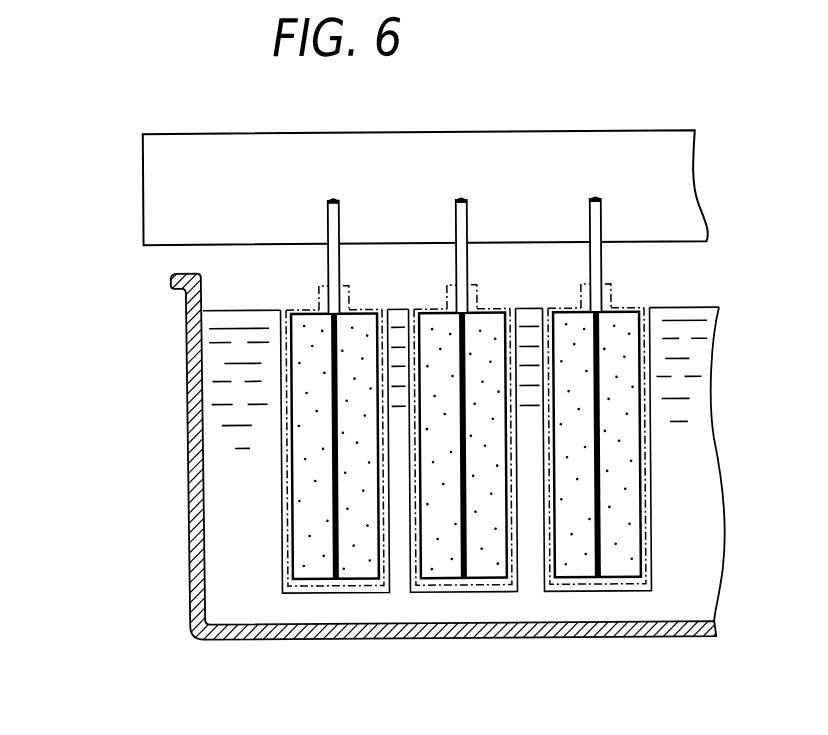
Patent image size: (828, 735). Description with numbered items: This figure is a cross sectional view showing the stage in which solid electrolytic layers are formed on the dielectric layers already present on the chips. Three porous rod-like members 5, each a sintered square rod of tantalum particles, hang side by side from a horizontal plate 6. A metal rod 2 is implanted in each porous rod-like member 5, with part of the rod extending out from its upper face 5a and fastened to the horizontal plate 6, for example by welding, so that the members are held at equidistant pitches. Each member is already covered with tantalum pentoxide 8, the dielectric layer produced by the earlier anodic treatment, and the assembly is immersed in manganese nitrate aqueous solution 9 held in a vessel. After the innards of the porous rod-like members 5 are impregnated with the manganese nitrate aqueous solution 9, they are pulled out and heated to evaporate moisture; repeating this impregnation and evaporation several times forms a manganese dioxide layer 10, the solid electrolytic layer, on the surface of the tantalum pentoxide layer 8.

The metal rod 2 is at (337, 222).
The porous rod-like member 5 is at (310, 562).
The upper face 5a is at (352, 311).
The horizontal plate 6 is at (471, 155).
The tantalum pentoxide 8 is at (365, 586).
The manganese nitrate aqueous solution 9 is at (213, 548).
The manganese dioxide layer 10 is at (385, 592).